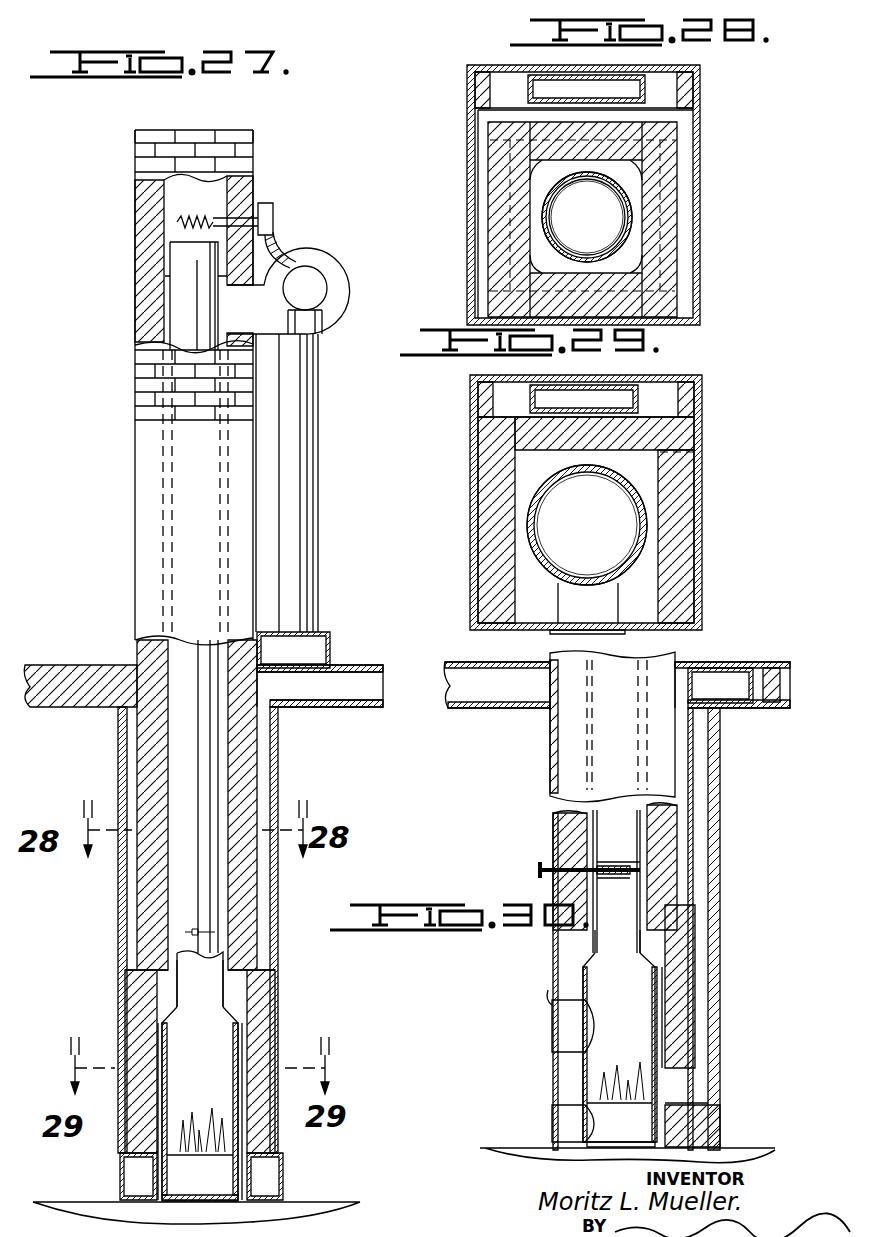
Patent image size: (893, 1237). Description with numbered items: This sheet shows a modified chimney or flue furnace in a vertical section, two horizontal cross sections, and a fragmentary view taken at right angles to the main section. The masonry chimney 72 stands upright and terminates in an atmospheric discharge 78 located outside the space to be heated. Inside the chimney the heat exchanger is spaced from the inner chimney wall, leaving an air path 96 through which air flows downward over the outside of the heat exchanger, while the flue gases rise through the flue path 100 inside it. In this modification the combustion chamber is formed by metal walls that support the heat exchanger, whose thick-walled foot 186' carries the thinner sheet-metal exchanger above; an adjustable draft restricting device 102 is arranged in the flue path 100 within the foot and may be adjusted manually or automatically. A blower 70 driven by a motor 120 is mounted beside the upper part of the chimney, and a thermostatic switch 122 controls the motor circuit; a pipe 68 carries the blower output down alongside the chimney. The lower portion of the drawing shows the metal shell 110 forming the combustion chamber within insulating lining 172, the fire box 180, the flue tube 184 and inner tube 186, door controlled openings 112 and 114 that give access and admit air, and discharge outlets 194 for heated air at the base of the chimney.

In FIG. 27, the blower discharge pipe 68 is at (311, 481).
In FIG. 27, the blower 70 is at (338, 292).
In FIG. 27, the masonry chimney 72 is at (137, 517).
In FIG. 29, the masonry chimney 72 is at (682, 517).
In FIG. 30, the masonry chimney 72 is at (612, 726).
In FIG. 27, the atmospheric discharge 78 is at (210, 130).
In FIG. 27, the path for downward flow of air 96 is at (224, 800).
In FIG. 28, the path for downward flow of air 96 is at (640, 168).
In FIG. 29, the path for downward flow of air 96 is at (645, 465).
In FIG. 27, the path of the flue gases 100 is at (185, 987).
In FIG. 28, the adjustable draft restricting device 102 is at (565, 223).
In FIG. 30, the adjustable draft restricting device 102 is at (556, 880).
In FIG. 27, the inner casing 110 is at (238, 1132).
In FIG. 28, the inner casing 110 is at (632, 185).
In FIG. 29, the inner casing 110 is at (637, 558).
In FIG. 30, the inner casing 110 is at (662, 1020).
In FIG. 30, the air inlet box 112 is at (565, 1032).
In FIG. 30, the lower air box 114 is at (562, 1122).
In FIG. 27, the motor 120 is at (312, 276).
In FIG. 27, the thermostatic switch 122 is at (273, 215).
In FIG. 27, the insulating lining 172 is at (245, 1000).
In FIG. 30, the insulating lining 172 is at (696, 935).
In FIG. 27, the combustion chamber 180 is at (228, 1048).
In FIG. 29, the combustion chamber 180 is at (618, 515).
In FIG. 27, the flue pipe 184 is at (210, 913).
In FIG. 28, the flue pipe 184 is at (625, 232).
In FIG. 30, the flue pipe 184 is at (628, 836).
In FIG. 30, the inner tube 186 is at (694, 901).
In FIG. 27, the inner tube (modified) 186' is at (265, 970).
In FIG. 27, the base support 194 is at (150, 1165).
In FIG. 30, the base support 194 is at (689, 1086).